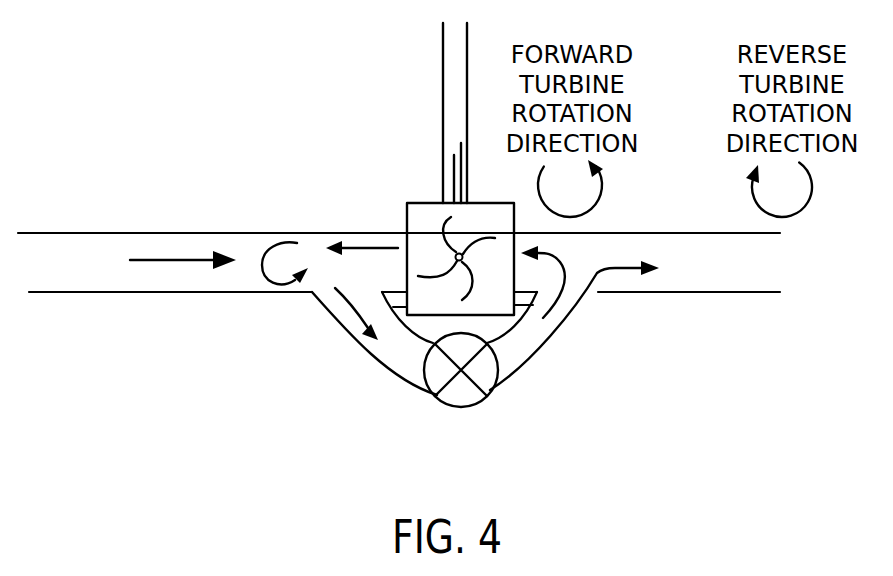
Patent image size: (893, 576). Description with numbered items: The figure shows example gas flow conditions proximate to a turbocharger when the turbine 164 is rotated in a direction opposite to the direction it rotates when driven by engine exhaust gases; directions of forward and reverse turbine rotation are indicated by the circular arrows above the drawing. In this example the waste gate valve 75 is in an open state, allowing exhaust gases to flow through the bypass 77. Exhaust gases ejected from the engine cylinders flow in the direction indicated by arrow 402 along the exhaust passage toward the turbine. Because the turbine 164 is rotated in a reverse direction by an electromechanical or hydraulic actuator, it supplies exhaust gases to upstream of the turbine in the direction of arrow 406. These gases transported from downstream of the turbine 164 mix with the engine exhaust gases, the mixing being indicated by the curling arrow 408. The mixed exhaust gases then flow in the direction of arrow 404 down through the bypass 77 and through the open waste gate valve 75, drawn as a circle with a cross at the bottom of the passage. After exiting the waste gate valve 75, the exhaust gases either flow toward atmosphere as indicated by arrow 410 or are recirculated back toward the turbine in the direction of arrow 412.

The turbine 164 is at (407, 203).
The arrow 402 is at (172, 260).
The arrow 404 is at (338, 306).
The arrow 406 is at (372, 247).
The arrow 408 is at (265, 255).
The arrow 410 is at (599, 273).
The arrow 412 is at (562, 280).
The bypass 77 is at (350, 342).
The waste gate valve 75 is at (470, 405).